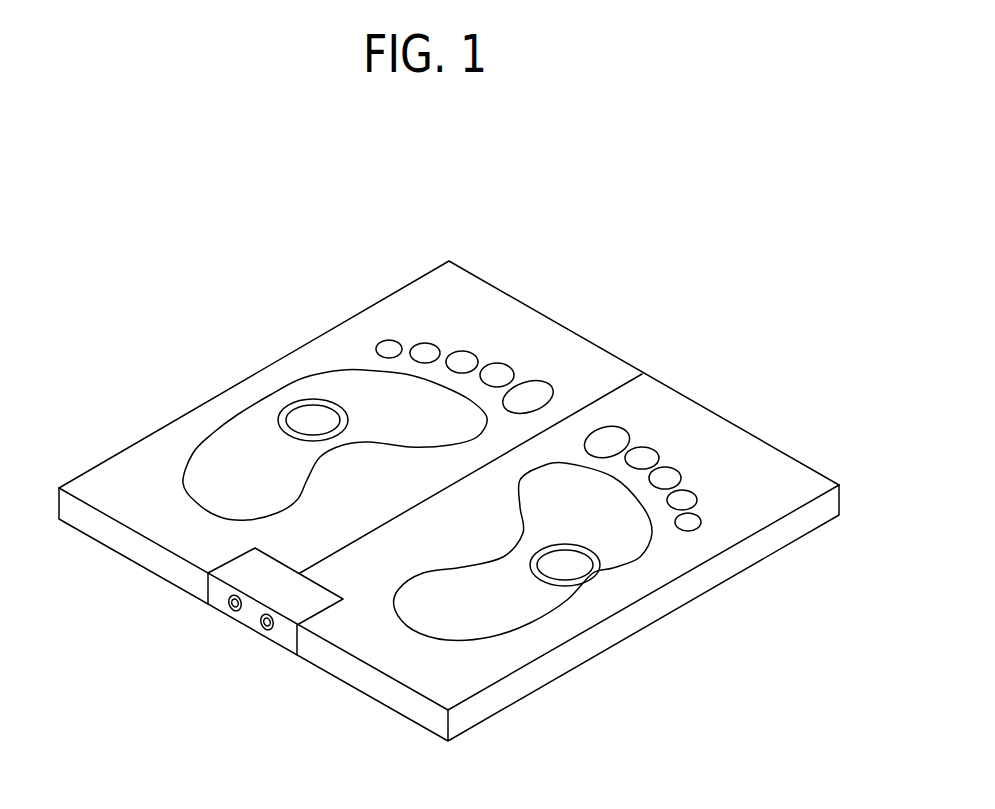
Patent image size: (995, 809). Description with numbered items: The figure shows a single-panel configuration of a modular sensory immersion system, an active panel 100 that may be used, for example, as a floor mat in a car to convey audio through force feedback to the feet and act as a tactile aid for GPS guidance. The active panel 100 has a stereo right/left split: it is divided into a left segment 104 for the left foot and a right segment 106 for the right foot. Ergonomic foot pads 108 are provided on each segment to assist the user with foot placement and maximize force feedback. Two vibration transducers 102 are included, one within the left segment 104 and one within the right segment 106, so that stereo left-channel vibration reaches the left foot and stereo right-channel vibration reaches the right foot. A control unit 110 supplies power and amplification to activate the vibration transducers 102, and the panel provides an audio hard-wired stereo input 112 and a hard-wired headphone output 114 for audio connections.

The active panel 100 is at (310, 218).
The vibration transducer 102 is at (287, 412).
The left segment 104 is at (525, 325).
The right segment 106 is at (728, 447).
The ergonomic foot pad 108 is at (227, 482).
The control unit 110 is at (248, 576).
The audio hard-wired stereo input 112 is at (229, 606).
The hard-wired headphone output 114 is at (264, 628).